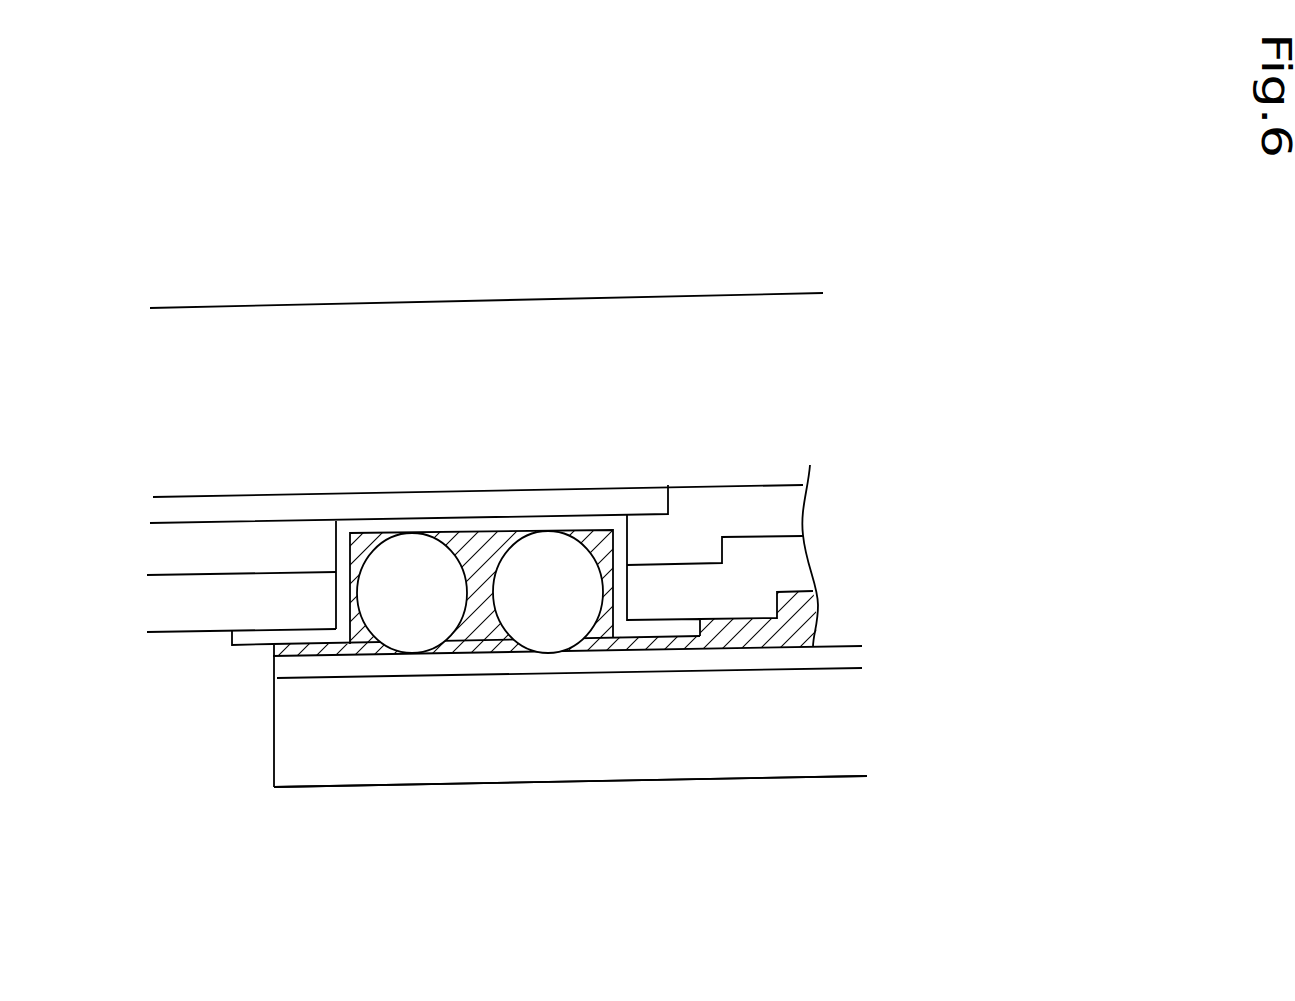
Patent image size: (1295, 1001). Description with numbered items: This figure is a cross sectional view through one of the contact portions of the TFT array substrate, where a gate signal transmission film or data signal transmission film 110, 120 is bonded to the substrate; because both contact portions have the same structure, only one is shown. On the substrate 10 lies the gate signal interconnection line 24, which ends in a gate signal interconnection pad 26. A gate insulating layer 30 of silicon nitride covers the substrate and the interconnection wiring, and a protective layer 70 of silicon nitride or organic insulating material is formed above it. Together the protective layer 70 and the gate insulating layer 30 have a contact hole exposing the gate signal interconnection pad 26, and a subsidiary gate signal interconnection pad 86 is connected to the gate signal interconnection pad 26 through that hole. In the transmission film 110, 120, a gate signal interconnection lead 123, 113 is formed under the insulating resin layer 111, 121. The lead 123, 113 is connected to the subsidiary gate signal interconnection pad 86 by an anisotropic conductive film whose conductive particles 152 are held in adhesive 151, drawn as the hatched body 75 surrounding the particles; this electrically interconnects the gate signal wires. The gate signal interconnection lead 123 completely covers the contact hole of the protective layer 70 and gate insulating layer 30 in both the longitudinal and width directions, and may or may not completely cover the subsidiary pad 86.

The substrate 10 is at (436, 313).
The gate signal interconnection line 24 is at (258, 505).
The gate signal interconnection pad 26 is at (638, 490).
The gate insulating layer 30 is at (170, 545).
The protective layer 70 is at (192, 618).
The subsidiary gate signal interconnection pad 86 is at (245, 648).
The adhesive 151 is at (310, 657).
The seal body 75 is at (478, 627).
The conductive particles 152 is at (520, 617).
The gate signal interconnection lead 123 is at (569, 780).
The layer 113 is at (620, 665).
The insulating resin layer 121 is at (570, 814).
The insulating resin layer 111 is at (690, 770).
The gate signal transmission film 110 is at (590, 829).
The data signal transmission film 120 is at (793, 781).